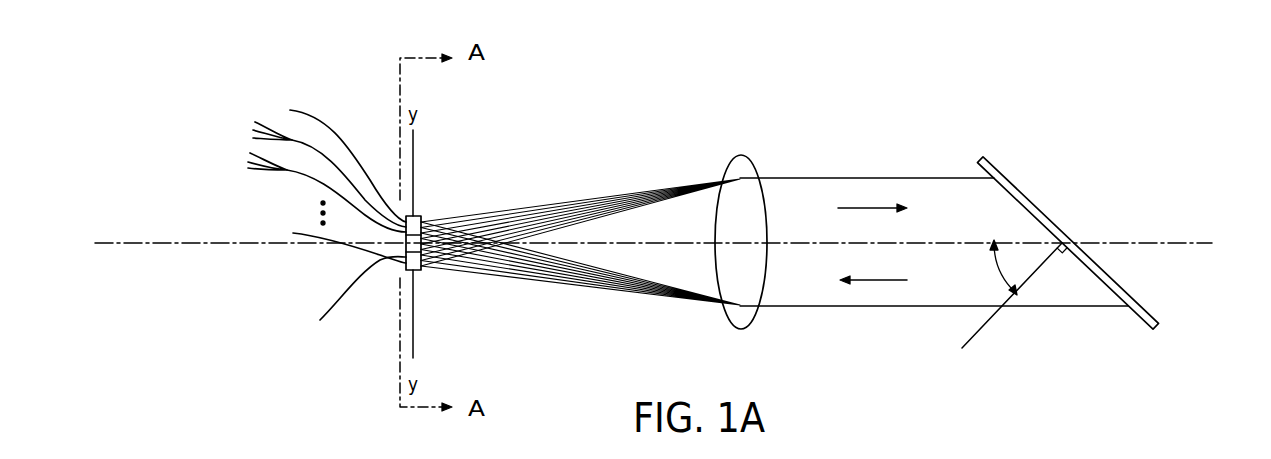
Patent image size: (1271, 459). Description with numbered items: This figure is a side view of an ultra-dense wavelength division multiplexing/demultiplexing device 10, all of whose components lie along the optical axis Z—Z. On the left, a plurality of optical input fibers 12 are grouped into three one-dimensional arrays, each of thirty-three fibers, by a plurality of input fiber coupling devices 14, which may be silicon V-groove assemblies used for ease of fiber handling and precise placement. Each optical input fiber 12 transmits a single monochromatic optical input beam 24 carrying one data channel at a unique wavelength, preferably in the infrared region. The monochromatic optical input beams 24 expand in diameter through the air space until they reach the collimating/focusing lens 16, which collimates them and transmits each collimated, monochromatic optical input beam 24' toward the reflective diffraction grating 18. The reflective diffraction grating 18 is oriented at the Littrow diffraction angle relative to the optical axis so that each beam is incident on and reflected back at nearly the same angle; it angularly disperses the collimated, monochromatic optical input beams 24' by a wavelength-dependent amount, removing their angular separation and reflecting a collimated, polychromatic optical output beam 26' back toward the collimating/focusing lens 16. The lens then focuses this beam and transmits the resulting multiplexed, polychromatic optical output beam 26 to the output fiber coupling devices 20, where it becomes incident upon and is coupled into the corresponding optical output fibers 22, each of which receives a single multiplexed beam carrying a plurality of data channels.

The ultra-dense wavelength division multiplexing/demultiplexing device 10 is at (808, 108).
The optical input fibers 12 is at (290, 110).
The input fiber coupling devices 14 is at (420, 216).
The collimating/focusing lens 16 is at (753, 200).
The reflective diffraction grating 18 is at (995, 167).
The output fiber coupling devices 20 is at (406, 250).
The optical output fibers 22 is at (320, 320).
The monochromatic optical input beams 24 is at (580, 153).
The collimated, monochromatic optical input beams 24' is at (867, 138).
The multiplexed, polychromatic optical output beams 26 is at (580, 296).
The collimated, polychromatic optical output beams 26' is at (934, 314).